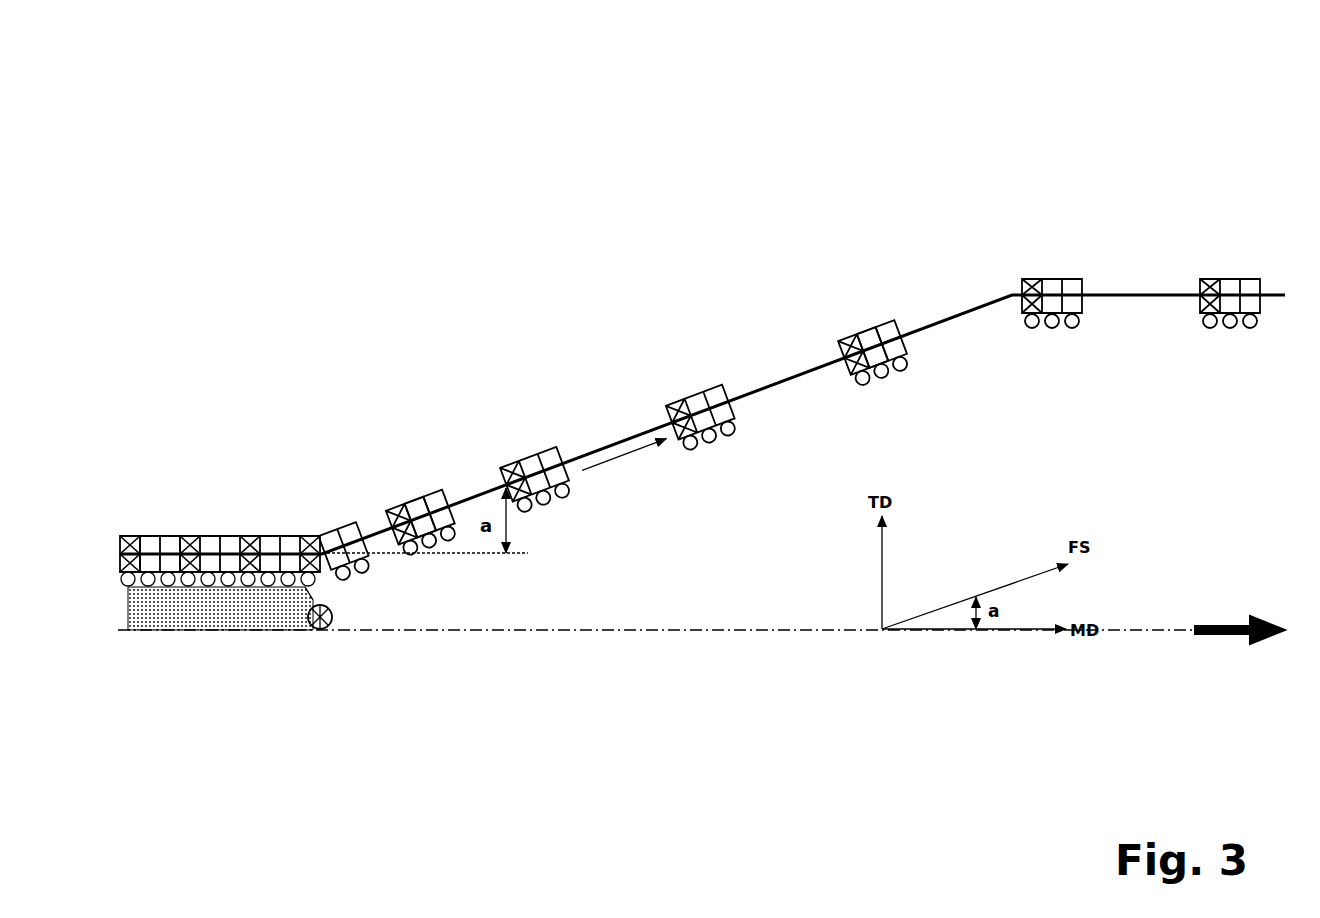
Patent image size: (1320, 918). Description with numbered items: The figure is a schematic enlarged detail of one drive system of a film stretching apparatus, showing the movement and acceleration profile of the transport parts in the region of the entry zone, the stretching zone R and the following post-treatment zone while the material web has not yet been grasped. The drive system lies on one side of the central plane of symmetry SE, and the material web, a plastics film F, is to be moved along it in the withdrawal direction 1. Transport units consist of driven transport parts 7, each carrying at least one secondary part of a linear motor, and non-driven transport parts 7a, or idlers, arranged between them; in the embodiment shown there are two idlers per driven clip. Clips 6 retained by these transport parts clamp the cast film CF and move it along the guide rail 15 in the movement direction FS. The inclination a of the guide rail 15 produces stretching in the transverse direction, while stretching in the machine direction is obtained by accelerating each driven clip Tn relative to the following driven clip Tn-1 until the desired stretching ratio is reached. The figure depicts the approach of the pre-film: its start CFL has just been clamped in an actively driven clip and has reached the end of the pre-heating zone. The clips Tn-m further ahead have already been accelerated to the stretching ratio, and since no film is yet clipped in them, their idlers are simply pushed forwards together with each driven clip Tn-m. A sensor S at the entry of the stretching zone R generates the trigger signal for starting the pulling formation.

The withdrawal direction 1 is at (1235, 637).
The clips 6 is at (230, 587).
The driven transport part 7 is at (130, 535).
The non-driven transport part 7a is at (170, 535).
The guide rail 15 is at (612, 443).
The cast film CF is at (158, 621).
The start of the pre-film CFL is at (295, 599).
The sensor S is at (322, 632).
The plane of symmetry SE is at (1173, 633).
The movement direction FS is at (624, 458).
The driven clip Tn is at (427, 467).
The following driven clip Tn-1 is at (515, 463).
The driven clips Tn-m is at (814, 251).
The stretching zone R is at (697, 345).
The plastics film F is at (1133, 456).